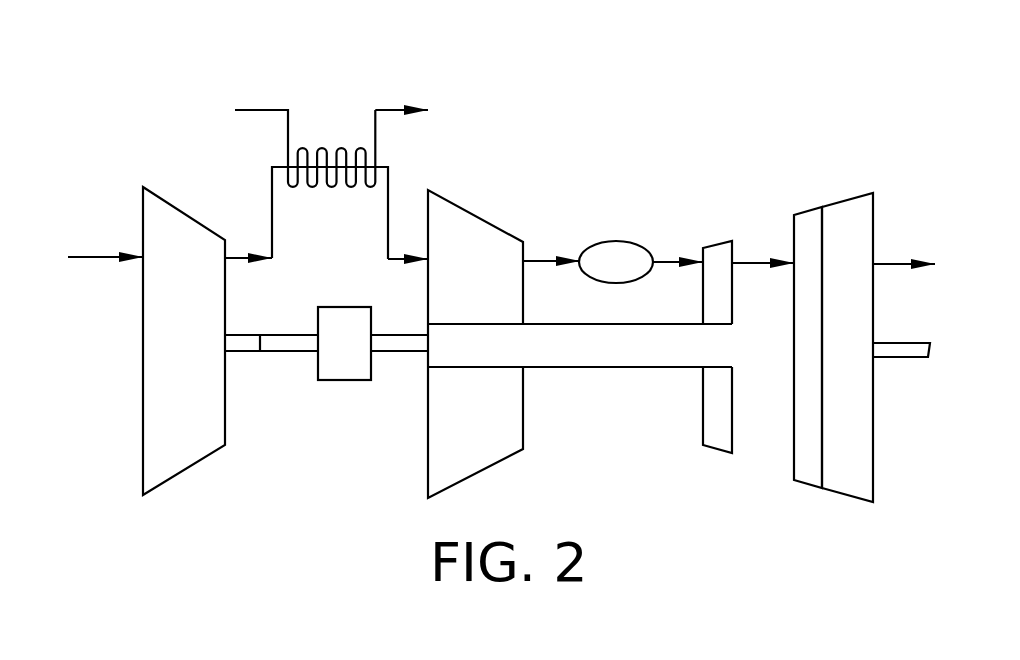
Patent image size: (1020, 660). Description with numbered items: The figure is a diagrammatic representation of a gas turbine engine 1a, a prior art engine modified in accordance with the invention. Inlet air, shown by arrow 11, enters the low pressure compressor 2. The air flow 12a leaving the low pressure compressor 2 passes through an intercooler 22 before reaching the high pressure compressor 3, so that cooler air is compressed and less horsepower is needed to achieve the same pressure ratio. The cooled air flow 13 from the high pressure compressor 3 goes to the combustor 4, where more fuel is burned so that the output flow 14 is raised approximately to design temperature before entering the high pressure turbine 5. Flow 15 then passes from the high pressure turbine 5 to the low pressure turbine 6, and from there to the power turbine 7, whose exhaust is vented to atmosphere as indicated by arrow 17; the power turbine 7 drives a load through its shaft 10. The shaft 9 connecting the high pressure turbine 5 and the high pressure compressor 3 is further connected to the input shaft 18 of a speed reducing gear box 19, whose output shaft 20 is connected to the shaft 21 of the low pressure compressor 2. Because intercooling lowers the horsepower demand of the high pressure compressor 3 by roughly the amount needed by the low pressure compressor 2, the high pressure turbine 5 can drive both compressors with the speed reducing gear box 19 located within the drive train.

The gas turbine engine 1a is at (667, 165).
The low pressure compressor 2 is at (172, 462).
The high pressure compressor 3 is at (476, 458).
The combustor 4 is at (610, 255).
The high pressure turbine 5 is at (712, 443).
The low pressure turbine 6 is at (805, 476).
The power turbine 7 is at (841, 486).
The shaft 9 is at (598, 370).
The shaft 10 is at (888, 352).
The arrow 11 is at (102, 256).
The air flow 12a is at (389, 180).
The arrow 13 is at (540, 259).
The arrow 14 is at (669, 260).
The arrow 15 is at (752, 263).
The arrow 17 is at (892, 263).
The input shaft 18 is at (391, 345).
The speed reducing gear box 19 is at (335, 380).
The output shaft 20 is at (298, 340).
The shaft 21 is at (243, 352).
The intercooler 22 is at (338, 72).